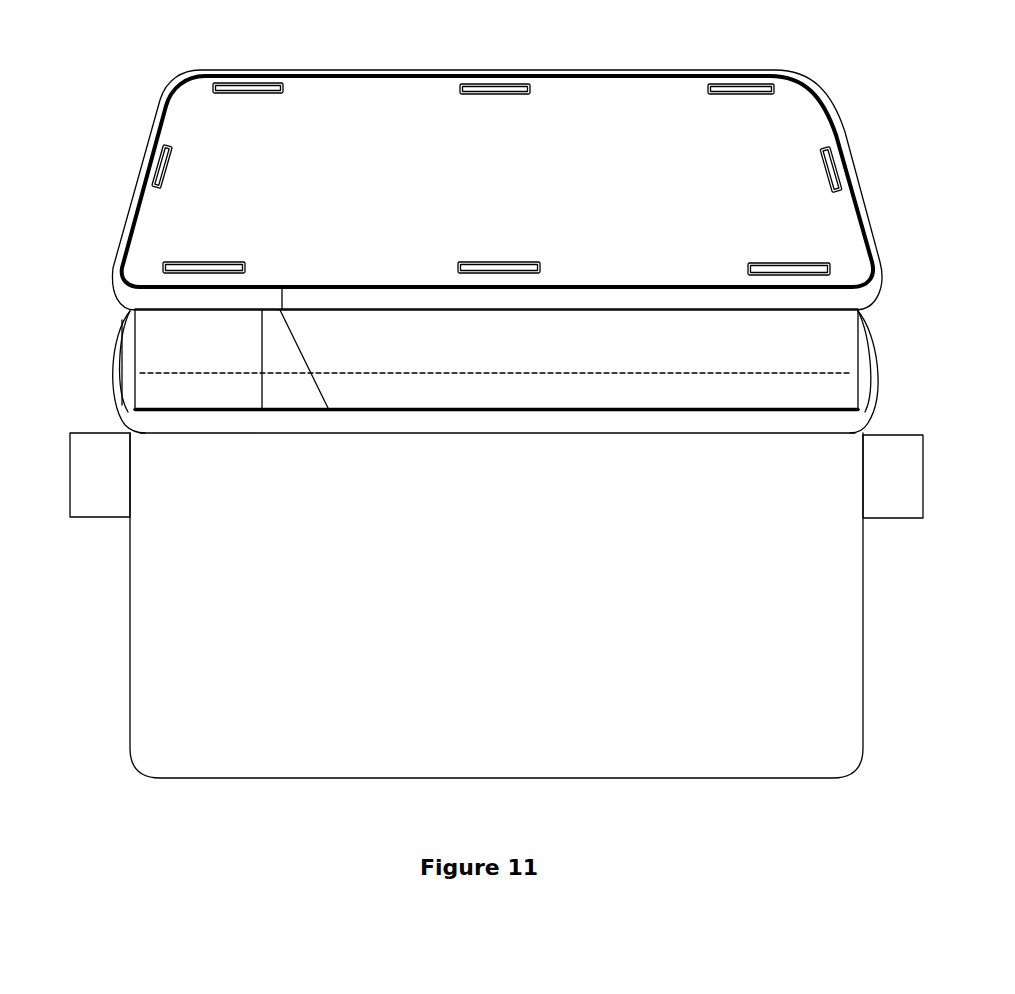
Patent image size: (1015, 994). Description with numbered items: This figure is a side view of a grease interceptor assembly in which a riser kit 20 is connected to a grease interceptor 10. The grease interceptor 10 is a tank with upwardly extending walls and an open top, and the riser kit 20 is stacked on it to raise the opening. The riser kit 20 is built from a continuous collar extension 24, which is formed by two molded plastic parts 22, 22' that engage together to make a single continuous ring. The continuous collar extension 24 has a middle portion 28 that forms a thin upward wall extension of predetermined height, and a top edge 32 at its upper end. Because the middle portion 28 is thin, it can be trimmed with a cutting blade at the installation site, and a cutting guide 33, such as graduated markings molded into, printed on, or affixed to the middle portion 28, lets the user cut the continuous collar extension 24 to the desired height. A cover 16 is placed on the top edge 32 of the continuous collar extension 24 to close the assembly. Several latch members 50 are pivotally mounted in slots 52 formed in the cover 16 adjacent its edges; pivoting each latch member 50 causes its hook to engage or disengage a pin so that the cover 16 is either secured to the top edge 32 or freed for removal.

The grease interceptor 10 is at (886, 612).
The cover 16 is at (625, 90).
The riser kit 20 is at (910, 147).
The part of continuous collar extension 22 is at (217, 391).
The part of continuous collar extension 22' is at (350, 391).
The continuous collar extension 24 is at (118, 360).
The middle portion 28 is at (835, 372).
The top edge 32 is at (883, 279).
The cutting guide 33 is at (853, 407).
The latch member 50 is at (157, 160).
The slot 52 is at (173, 158).